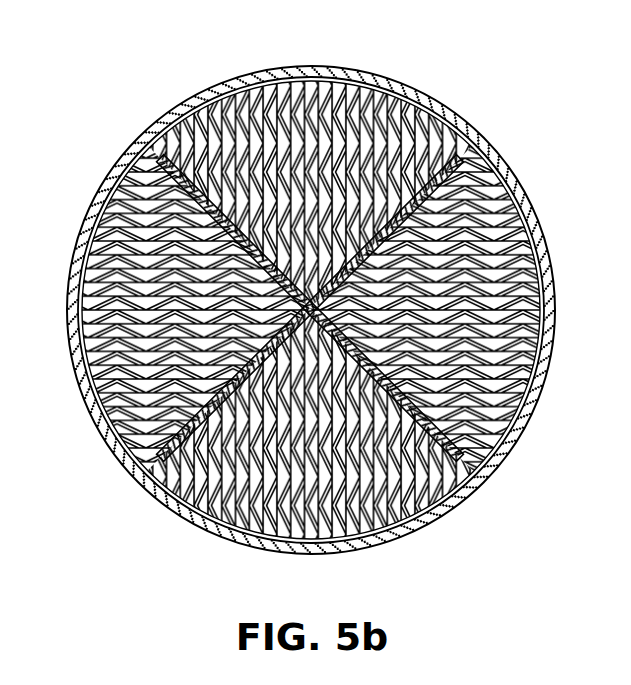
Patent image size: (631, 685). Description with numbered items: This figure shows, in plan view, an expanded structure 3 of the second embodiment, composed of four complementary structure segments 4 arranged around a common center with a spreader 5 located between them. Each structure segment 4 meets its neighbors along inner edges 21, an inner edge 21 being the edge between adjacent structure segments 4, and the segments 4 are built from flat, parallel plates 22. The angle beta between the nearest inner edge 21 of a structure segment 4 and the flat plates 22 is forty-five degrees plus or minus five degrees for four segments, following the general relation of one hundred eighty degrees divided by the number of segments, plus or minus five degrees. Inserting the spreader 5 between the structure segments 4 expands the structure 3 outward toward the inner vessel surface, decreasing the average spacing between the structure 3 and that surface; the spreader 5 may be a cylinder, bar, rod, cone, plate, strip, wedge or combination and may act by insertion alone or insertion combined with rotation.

The structure 3 is at (541, 362).
The complementary structure segments 4 is at (244, 120).
The spreader 5 is at (122, 408).
The inner edge 21 is at (433, 207).
The flat plates 22 is at (404, 157).